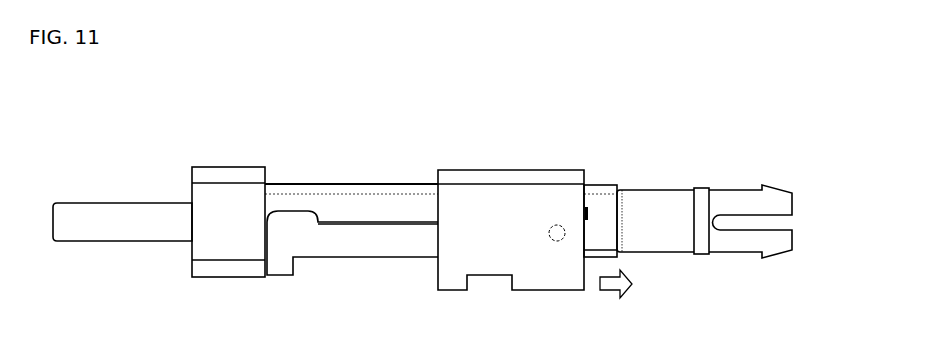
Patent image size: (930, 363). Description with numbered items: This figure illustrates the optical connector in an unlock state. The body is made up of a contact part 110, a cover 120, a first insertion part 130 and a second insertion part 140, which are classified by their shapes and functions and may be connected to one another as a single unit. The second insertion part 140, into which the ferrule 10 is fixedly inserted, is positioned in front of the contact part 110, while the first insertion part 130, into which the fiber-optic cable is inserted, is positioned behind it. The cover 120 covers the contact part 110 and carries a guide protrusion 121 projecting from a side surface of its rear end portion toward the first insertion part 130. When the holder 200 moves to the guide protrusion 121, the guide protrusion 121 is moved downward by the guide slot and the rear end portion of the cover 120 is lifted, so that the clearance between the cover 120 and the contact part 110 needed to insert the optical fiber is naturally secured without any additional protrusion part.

The ferrule 10 is at (136, 233).
The contact part 110 is at (354, 183).
The cover 120 is at (387, 258).
The guide protrusion 121 is at (553, 241).
The first insertion part 130 is at (735, 253).
The second insertion part 140 is at (227, 268).
The holder 200 is at (500, 145).